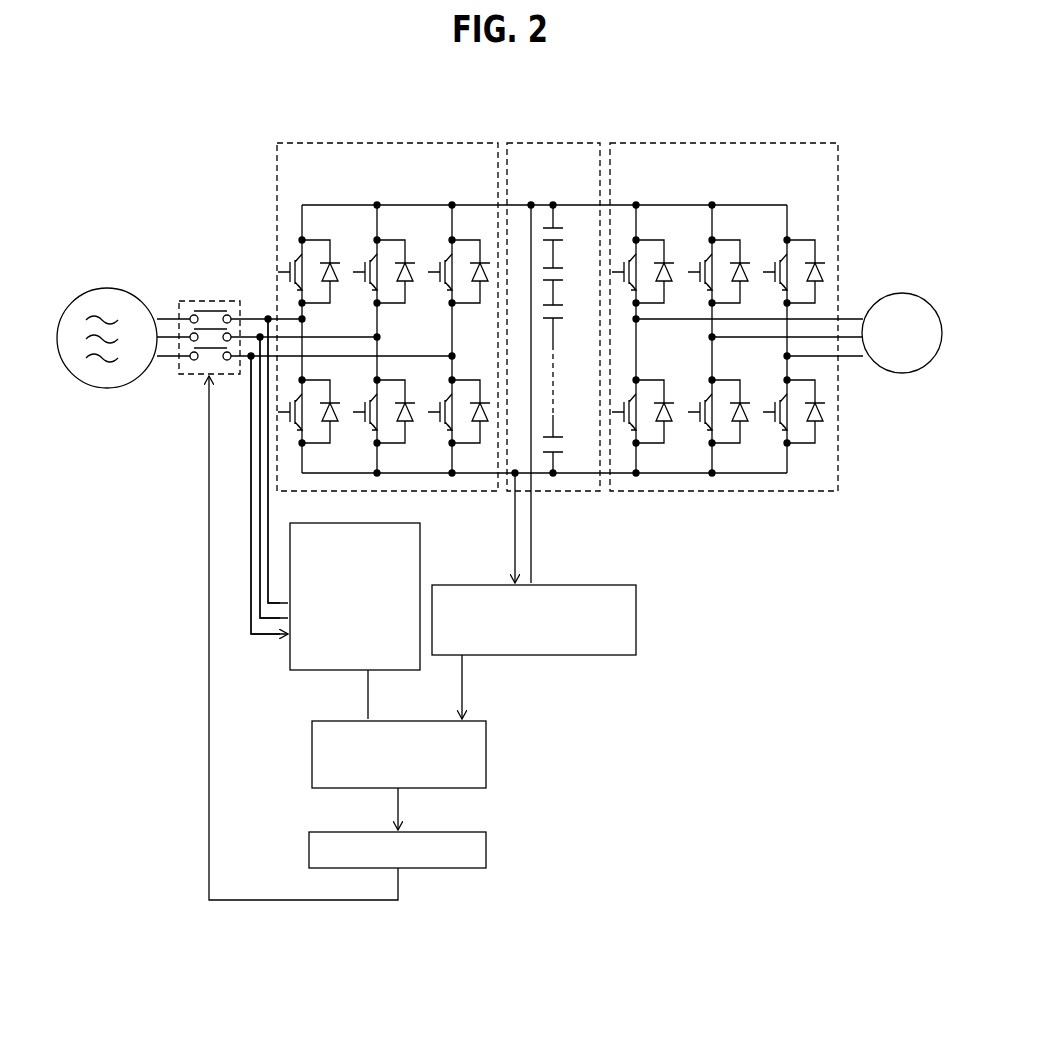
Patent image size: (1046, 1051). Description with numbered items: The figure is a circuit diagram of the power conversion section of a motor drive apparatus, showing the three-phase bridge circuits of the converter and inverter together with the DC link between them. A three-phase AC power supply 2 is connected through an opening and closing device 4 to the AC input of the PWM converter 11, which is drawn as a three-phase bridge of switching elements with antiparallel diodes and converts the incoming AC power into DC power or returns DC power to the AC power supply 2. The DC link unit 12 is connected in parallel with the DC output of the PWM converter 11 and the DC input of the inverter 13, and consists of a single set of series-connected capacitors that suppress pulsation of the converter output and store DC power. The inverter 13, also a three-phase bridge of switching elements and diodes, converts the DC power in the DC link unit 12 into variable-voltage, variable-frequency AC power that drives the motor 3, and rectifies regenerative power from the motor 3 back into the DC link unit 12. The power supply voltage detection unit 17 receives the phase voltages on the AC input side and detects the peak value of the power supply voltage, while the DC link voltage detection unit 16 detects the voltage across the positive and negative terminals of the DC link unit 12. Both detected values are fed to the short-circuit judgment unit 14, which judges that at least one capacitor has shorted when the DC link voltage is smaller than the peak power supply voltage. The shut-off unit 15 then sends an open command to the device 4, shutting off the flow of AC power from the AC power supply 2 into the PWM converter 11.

The AC power supply 2 is at (100, 291).
The motor 3 is at (897, 293).
The breaker / switch 4 is at (190, 300).
The PWM converter 11 is at (300, 143).
The DC link unit 12 is at (517, 143).
The inverter 13 is at (640, 143).
The short-circuit judgment unit 14 is at (314, 721).
The shut-off unit 15 is at (310, 832).
The DC link voltage detection unit 16 is at (452, 585).
The power supply voltage detection unit 17 is at (420, 542).